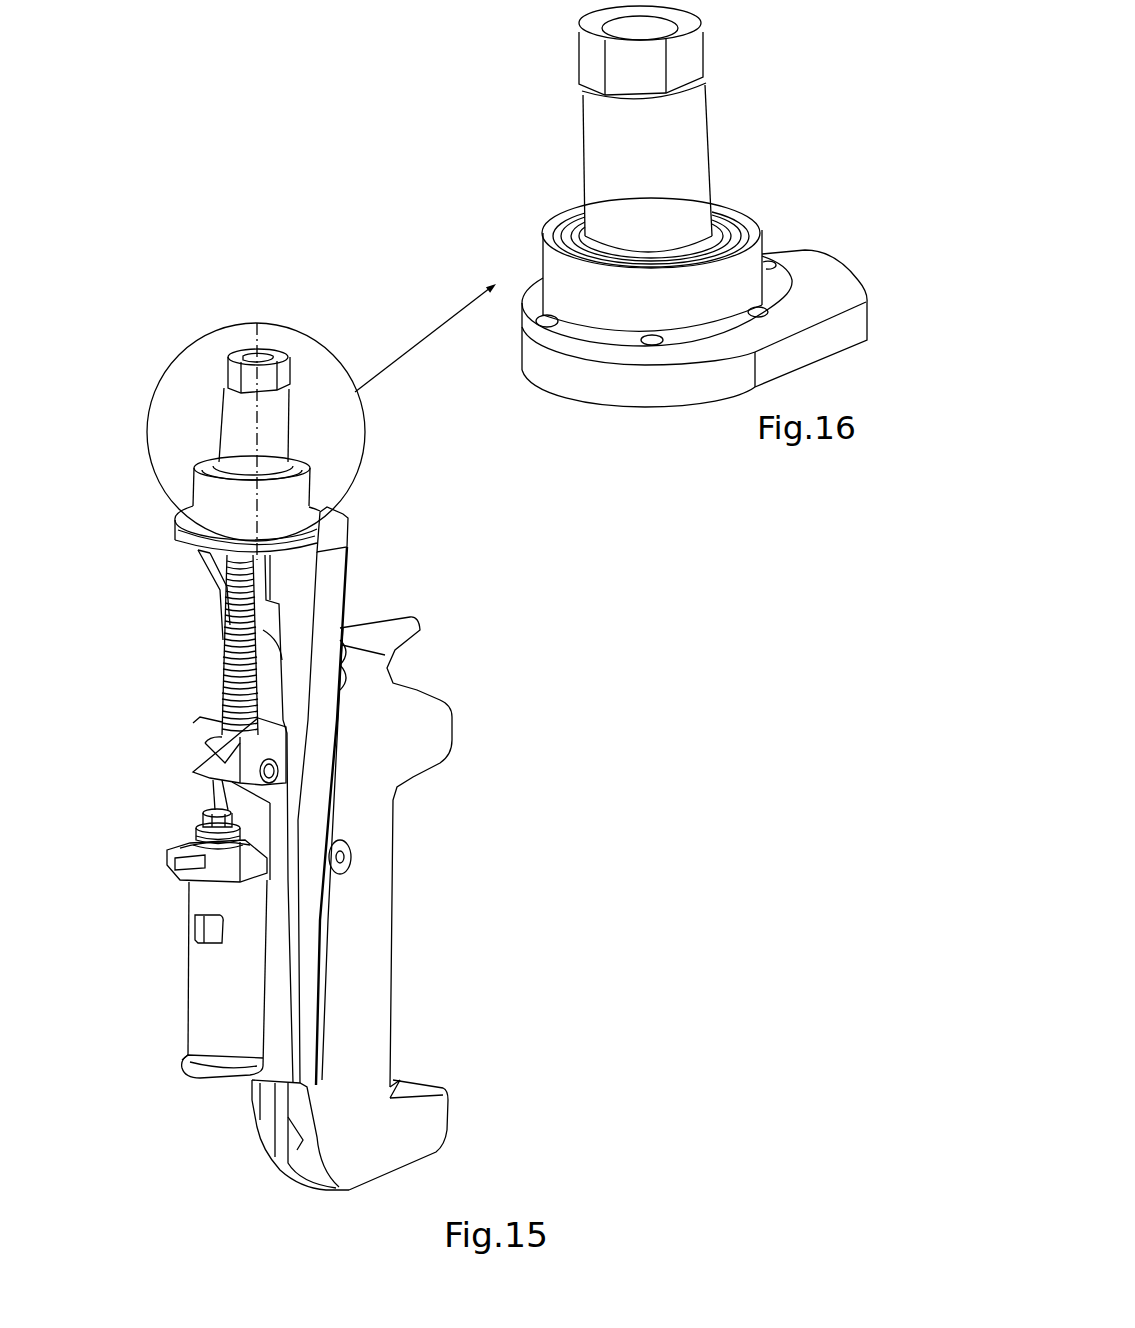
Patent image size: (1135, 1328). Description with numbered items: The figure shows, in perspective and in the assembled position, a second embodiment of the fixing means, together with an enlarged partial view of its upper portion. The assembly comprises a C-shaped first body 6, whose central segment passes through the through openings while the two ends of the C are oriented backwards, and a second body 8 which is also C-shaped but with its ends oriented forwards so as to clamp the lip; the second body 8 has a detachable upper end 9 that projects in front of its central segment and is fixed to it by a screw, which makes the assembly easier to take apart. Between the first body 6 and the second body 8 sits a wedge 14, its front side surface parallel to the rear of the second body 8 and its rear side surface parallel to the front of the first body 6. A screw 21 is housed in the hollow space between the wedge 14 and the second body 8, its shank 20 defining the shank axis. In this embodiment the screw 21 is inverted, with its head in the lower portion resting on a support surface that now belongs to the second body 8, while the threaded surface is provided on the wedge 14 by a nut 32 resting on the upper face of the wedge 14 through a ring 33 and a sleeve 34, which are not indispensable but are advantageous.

In FIG. 15, the first body 6 is at (425, 725).
In FIG. 15, the second body 8 is at (220, 972).
In FIG. 15, the upper end 9 is at (200, 840).
In FIG. 15, the wedge 14 is at (330, 572).
In FIG. 15, the shank 20 is at (223, 711).
In FIG. 15, the screw 21 is at (219, 672).
In FIG. 16, the nut 32 is at (709, 56).
In FIG. 16, the ring 33 is at (813, 277).
In FIG. 16, the sleeve 34 is at (676, 148).